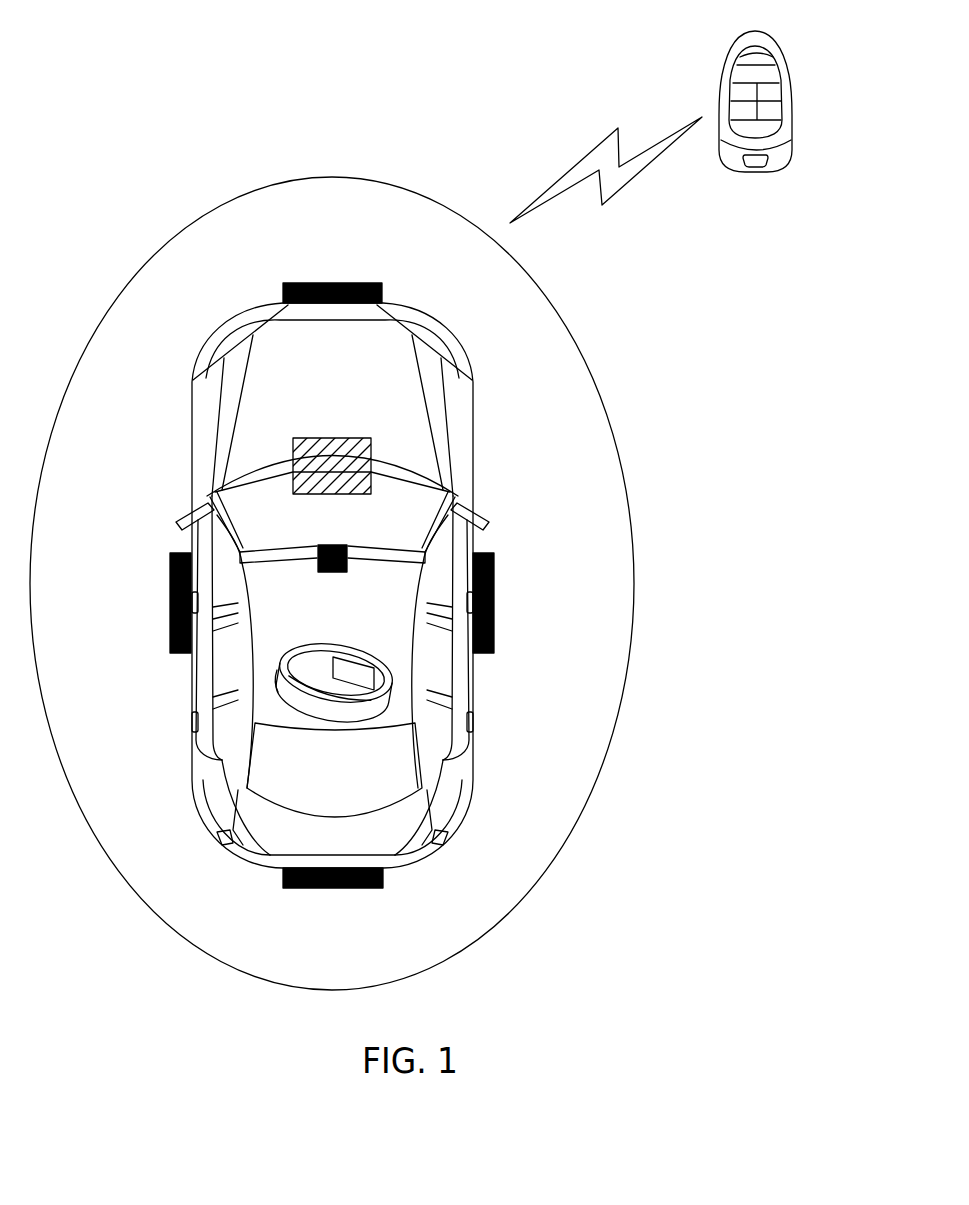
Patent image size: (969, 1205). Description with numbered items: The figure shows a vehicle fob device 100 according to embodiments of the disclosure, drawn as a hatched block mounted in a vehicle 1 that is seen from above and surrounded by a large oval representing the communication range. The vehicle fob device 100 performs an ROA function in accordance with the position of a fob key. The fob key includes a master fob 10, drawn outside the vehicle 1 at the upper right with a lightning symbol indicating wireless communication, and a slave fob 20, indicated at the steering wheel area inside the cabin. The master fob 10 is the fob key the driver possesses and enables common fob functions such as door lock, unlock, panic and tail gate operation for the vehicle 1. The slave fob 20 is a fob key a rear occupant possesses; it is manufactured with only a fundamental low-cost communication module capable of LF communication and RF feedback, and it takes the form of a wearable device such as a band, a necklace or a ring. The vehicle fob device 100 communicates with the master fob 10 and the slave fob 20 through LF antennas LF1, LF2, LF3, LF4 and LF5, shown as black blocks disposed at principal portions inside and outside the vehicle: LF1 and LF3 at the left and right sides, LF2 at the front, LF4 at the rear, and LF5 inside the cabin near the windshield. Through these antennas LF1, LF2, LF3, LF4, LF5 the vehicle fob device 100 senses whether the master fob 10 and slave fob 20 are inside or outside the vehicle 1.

The vehicle 1 is at (473, 425).
The master fob 10 is at (755, 172).
The slave fob 20 is at (347, 712).
The vehicle fob device 100 is at (293, 462).
The LF antenna LF1 is at (170, 603).
The LF antenna LF2 is at (332, 283).
The LF antenna LF3 is at (495, 602).
The LF antenna LF4 is at (333, 888).
The LF antenna LF5 is at (318, 558).